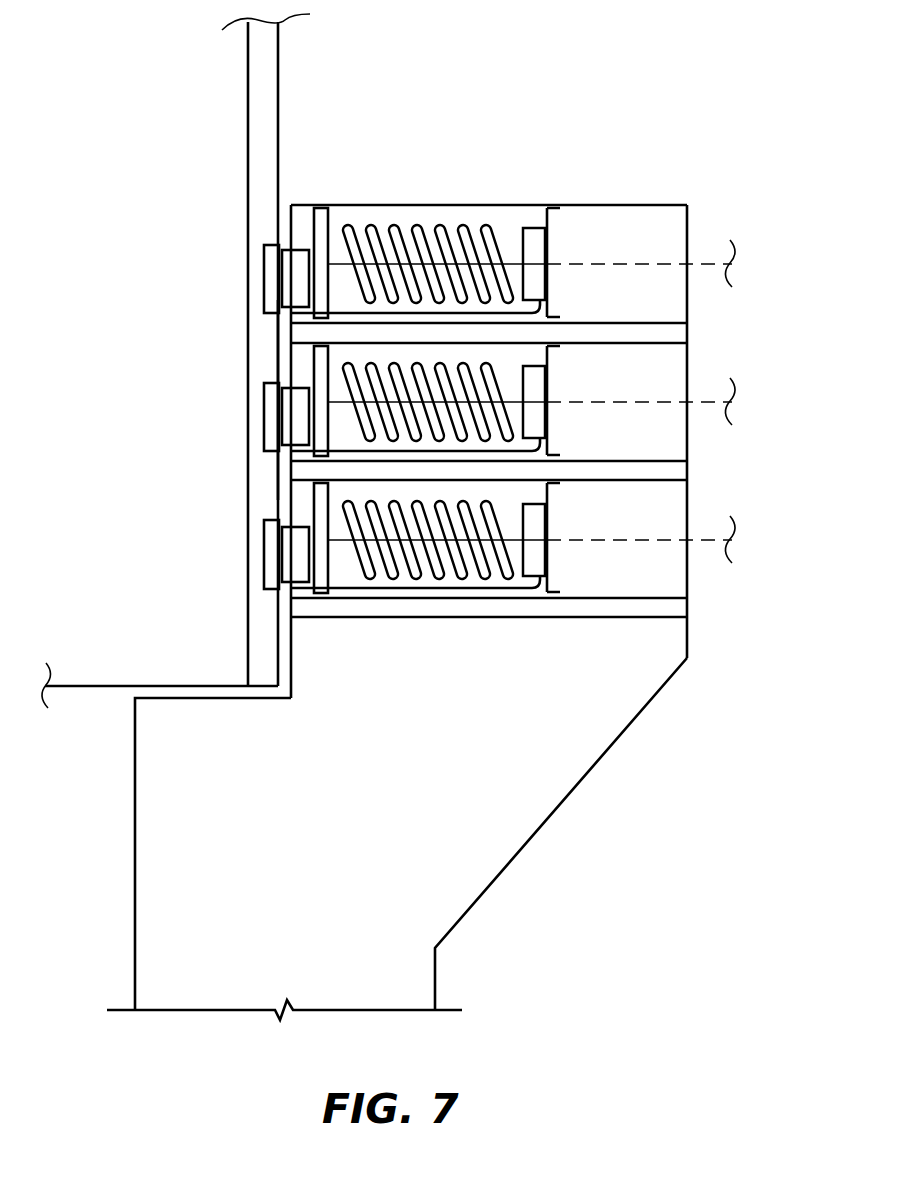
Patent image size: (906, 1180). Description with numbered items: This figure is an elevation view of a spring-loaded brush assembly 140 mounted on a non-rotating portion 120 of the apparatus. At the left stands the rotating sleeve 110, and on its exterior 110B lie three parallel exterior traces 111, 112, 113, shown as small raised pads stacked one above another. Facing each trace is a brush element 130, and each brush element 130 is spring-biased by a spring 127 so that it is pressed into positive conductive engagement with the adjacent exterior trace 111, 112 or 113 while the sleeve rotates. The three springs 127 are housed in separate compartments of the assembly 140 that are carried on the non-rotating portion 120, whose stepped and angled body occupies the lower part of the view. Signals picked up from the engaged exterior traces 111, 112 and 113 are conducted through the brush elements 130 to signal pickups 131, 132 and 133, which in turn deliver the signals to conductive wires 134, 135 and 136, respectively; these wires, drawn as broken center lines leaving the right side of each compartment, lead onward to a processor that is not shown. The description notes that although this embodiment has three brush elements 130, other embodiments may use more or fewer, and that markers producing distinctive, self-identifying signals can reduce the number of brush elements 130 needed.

The rotating sleeve 110 is at (278, 93).
The exterior of the rotating sleeve 110B is at (278, 146).
The exterior trace 111 is at (266, 527).
The exterior trace 112 is at (266, 390).
The exterior trace 113 is at (266, 252).
The non-rotating portion 120 is at (563, 800).
The spring 127 is at (445, 577).
The brush element 130 is at (290, 290).
The signal pickup 131 is at (376, 598).
The signal pickup 132 is at (548, 454).
The signal pickup 133 is at (548, 316).
The conductive wire 134 is at (705, 263).
The conductive wire 135 is at (705, 401).
The conductive wire 136 is at (705, 539).
The spring-loaded brush assembly 140 is at (700, 83).